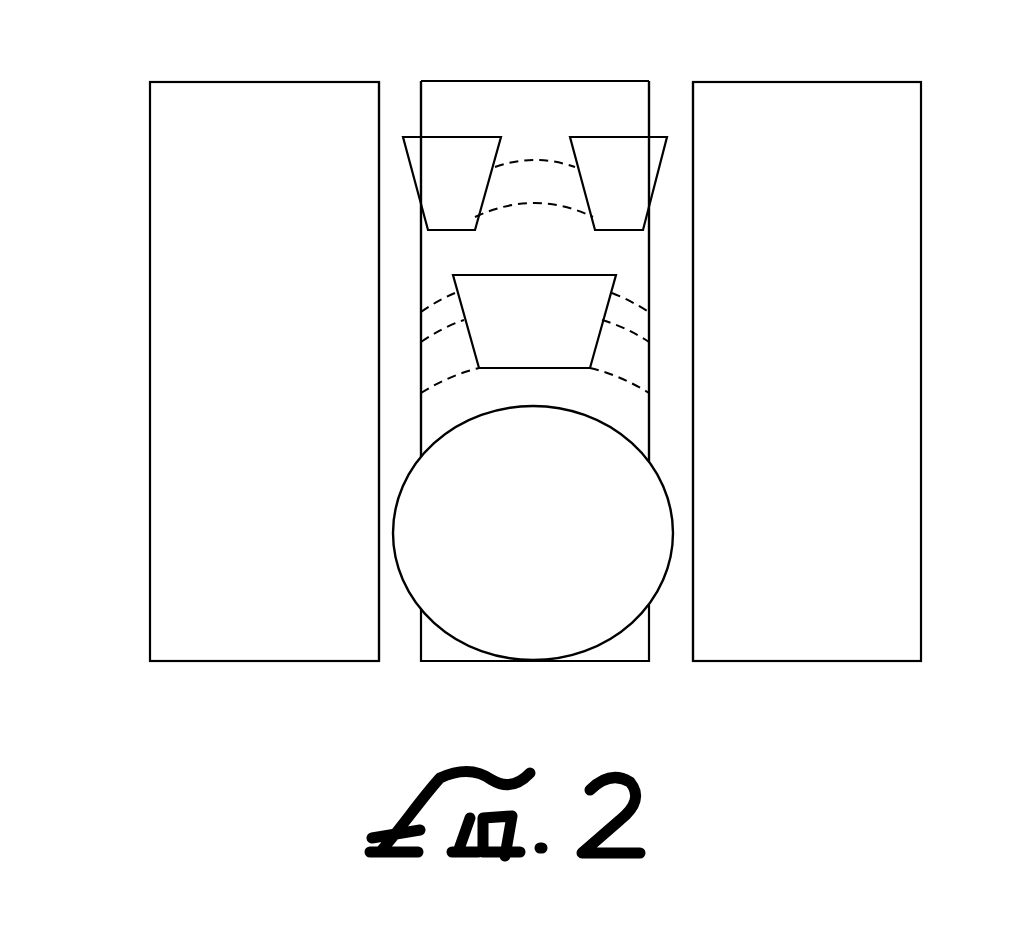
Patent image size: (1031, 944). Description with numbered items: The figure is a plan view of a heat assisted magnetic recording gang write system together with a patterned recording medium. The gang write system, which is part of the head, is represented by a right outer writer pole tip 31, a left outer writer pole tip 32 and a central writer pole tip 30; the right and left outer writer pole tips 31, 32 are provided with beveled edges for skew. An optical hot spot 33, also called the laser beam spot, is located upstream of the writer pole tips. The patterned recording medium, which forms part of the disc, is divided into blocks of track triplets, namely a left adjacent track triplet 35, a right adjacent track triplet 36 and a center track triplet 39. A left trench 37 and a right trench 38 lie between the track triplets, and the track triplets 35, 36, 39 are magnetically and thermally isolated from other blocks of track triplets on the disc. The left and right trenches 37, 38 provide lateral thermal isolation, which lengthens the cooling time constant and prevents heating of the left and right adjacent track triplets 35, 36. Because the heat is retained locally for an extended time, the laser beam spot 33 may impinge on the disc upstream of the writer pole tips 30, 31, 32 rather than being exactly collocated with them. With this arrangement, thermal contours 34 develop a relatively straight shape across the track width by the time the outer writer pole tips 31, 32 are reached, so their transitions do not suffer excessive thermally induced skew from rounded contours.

The central writer pole tip 30 is at (553, 342).
The right outer writer pole tip 31 is at (456, 126).
The left outer writer pole tip 32 is at (618, 126).
The optical hot spot 33 is at (588, 634).
The thermal contours 34 is at (414, 345).
The left adjacent track triplet 35 is at (146, 127).
The right adjacent track triplet 36 is at (925, 168).
The left trench 37 is at (398, 658).
The right trench 38 is at (667, 656).
The center track triplet 39 is at (538, 77).